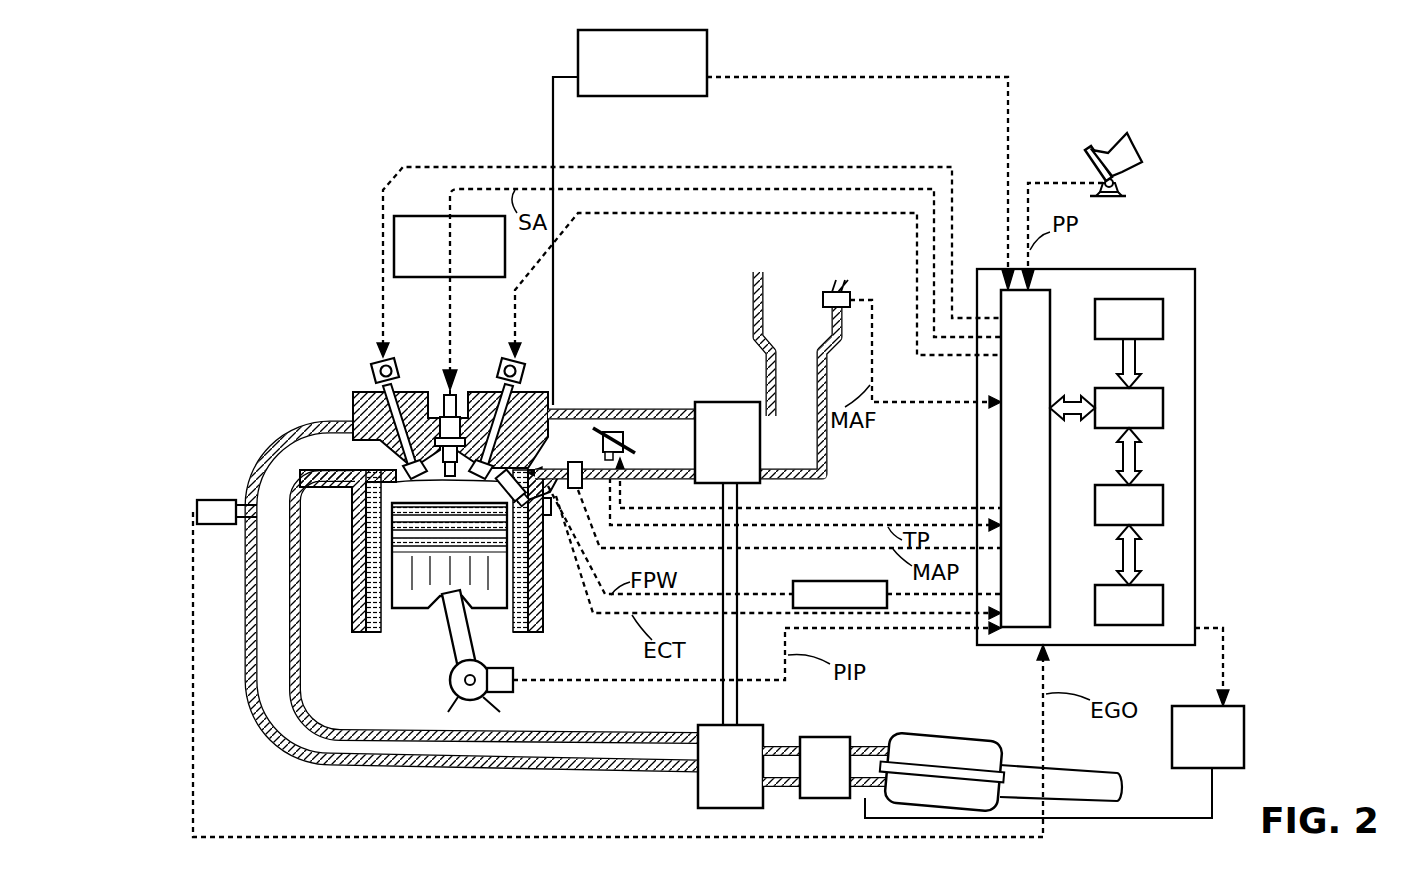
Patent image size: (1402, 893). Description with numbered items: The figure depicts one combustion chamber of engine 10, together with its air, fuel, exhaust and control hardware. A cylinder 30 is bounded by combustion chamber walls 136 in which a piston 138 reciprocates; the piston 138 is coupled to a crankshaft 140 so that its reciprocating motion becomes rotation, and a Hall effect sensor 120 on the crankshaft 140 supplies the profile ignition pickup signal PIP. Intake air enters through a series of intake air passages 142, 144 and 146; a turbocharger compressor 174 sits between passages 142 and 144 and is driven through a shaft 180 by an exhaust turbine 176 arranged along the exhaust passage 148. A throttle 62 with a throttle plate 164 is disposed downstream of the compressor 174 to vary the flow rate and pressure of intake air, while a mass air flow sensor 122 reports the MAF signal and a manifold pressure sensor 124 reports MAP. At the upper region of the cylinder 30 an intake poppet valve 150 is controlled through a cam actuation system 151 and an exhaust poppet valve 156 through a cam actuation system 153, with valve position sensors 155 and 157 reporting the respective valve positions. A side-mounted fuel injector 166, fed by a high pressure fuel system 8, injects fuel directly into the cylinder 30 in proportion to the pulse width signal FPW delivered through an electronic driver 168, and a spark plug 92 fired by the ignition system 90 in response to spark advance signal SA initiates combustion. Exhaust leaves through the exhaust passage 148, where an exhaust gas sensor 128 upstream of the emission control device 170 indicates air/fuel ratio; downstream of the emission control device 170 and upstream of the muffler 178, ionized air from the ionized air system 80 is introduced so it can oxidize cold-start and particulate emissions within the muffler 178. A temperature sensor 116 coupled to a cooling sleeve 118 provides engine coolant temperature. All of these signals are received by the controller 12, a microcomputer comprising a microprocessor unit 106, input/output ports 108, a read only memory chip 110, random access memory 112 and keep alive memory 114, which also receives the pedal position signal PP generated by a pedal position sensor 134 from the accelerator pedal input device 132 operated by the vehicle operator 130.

The high pressure fuel system 8 is at (707, 42).
The engine 10 is at (192, 106).
The controller 12 is at (1129, 443).
The cylinder 30 is at (376, 500).
The throttle 62 is at (614, 432).
The ionized air system 80 is at (1221, 749).
The ignition system 90 is at (408, 216).
The spark plug 92 is at (447, 425).
The microprocessor unit 106 is at (1163, 404).
The input/output ports 108 is at (1050, 292).
The read only memory chip 110 is at (1163, 312).
The random access memory 112 is at (1163, 502).
The keep alive memory 114 is at (1163, 602).
The temperature sensor 116 is at (550, 516).
The cooling sleeve 118 is at (540, 602).
The Hall effect sensor 120 is at (506, 693).
The mass air flow sensor 122 is at (858, 282).
The manifold pressure sensor 124 is at (582, 492).
The exhaust gas sensor 128 is at (197, 505).
The vehicle operator 130 is at (1133, 150).
The input device 132 is at (1087, 155).
The pedal position sensor 134 is at (1118, 182).
The combustion chamber walls 136 is at (378, 636).
The piston 138 is at (432, 588).
The crankshaft 140 is at (452, 696).
The intake air passage 142 is at (815, 327).
The intake air passage 144 is at (686, 452).
The intake air passage 146 is at (592, 452).
The exhaust passage 148 is at (346, 462).
The intake poppet valve 150 is at (456, 415).
The cam actuation system 151 is at (508, 362).
The cam actuation system 153 is at (390, 362).
The valve position sensor 155 is at (528, 366).
The exhaust poppet valve 156 is at (392, 440).
The valve position sensor 157 is at (372, 362).
The throttle plate 164 is at (559, 409).
The fuel injector 166 is at (508, 478).
The electronic driver 168 is at (795, 582).
The emission control device 170 is at (830, 737).
The compressor 174 is at (714, 402).
The exhaust turbine 176 is at (698, 792).
The muffler 178 is at (946, 742).
The shaft 180 is at (738, 688).